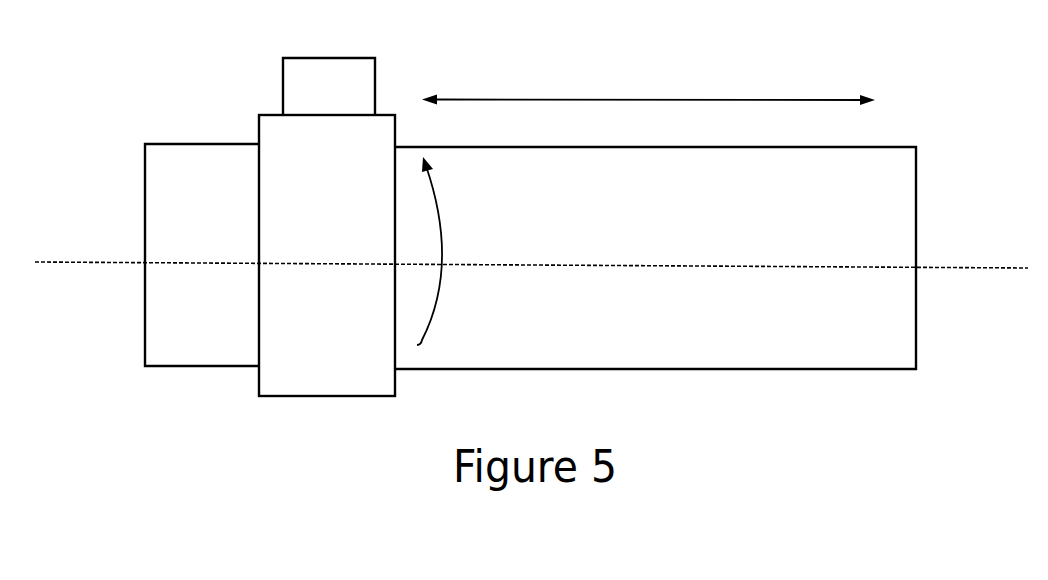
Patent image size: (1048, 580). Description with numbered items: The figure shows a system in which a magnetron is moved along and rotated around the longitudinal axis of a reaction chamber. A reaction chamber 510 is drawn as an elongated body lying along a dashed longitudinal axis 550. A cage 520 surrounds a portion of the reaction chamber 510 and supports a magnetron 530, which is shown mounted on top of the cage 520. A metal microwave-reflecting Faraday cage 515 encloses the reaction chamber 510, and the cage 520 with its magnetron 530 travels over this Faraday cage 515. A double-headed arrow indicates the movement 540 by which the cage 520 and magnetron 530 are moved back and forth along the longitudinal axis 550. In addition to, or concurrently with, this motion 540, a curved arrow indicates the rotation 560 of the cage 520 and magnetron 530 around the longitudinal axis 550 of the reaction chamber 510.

The reaction chamber 510 is at (181, 153).
The metal microwave-reflecting Faraday cage 515 is at (757, 147).
The cage 520 is at (285, 233).
The magnetron 530 is at (345, 66).
The movement along the longitudinal axis 540 is at (557, 99).
The longitudinal axis 550 is at (940, 266).
The rotation around the longitudinal axis 560 is at (443, 213).